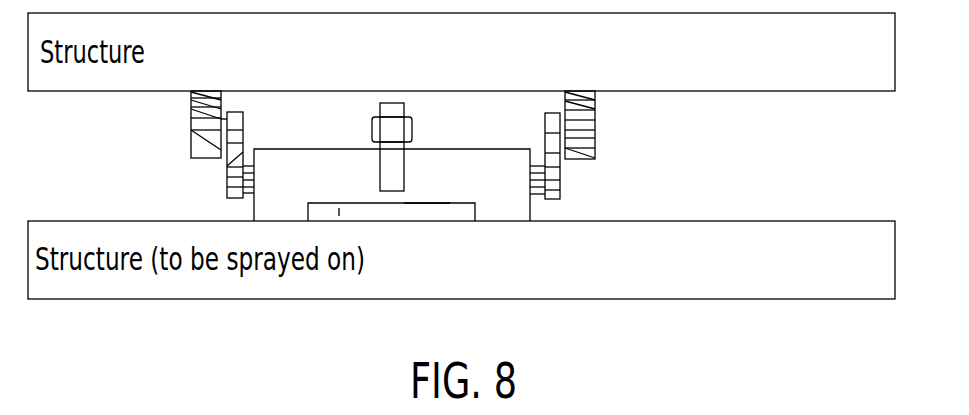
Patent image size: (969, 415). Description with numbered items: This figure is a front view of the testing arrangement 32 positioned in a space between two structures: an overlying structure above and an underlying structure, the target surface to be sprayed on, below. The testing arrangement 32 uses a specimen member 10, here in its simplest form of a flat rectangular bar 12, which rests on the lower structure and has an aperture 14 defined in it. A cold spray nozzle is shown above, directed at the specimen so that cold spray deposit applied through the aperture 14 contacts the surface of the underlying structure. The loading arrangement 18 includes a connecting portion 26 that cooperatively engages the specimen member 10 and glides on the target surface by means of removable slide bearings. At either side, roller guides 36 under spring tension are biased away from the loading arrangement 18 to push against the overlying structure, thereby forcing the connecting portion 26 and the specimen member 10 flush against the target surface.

The specimen member 10 is at (428, 186).
The flat rectangular bar 12 is at (475, 203).
The aperture 14 is at (425, 218).
The loading arrangement 18 is at (298, 140).
The connecting portion 26 is at (455, 163).
The testing arrangement 32 is at (692, 146).
The roller guide 36 is at (174, 146).
The cold spray nozzle is at (412, 105).